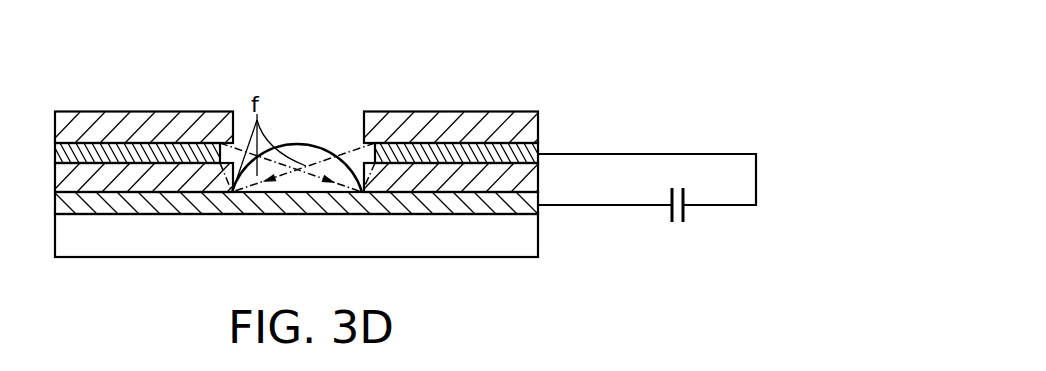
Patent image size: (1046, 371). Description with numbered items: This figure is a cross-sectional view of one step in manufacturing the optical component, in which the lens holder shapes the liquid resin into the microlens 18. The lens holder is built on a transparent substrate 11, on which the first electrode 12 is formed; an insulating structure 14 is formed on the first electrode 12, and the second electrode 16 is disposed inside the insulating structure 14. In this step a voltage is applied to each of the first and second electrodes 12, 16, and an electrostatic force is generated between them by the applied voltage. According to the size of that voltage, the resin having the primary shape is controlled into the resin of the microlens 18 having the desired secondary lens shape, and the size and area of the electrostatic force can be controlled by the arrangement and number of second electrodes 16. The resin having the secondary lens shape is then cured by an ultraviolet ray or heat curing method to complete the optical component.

The transparent substrate 11 is at (528, 248).
The first electrode 12 is at (528, 208).
The insulating structure 14 is at (540, 150).
The second electrode 16 is at (527, 128).
The microlens 18 is at (298, 144).